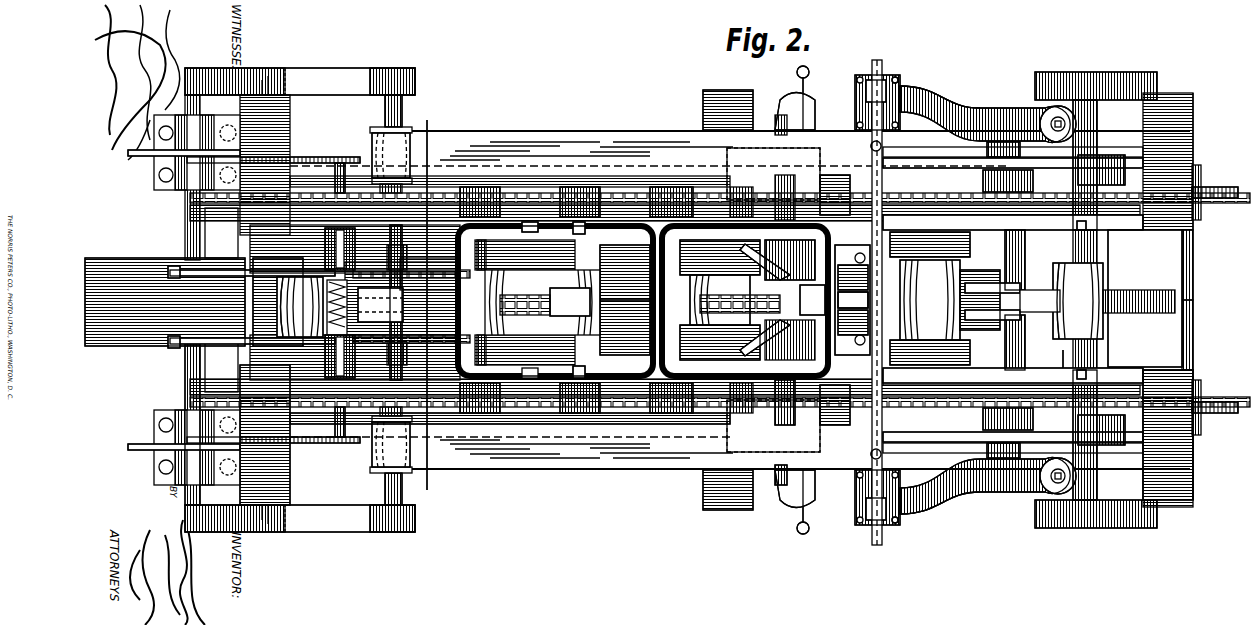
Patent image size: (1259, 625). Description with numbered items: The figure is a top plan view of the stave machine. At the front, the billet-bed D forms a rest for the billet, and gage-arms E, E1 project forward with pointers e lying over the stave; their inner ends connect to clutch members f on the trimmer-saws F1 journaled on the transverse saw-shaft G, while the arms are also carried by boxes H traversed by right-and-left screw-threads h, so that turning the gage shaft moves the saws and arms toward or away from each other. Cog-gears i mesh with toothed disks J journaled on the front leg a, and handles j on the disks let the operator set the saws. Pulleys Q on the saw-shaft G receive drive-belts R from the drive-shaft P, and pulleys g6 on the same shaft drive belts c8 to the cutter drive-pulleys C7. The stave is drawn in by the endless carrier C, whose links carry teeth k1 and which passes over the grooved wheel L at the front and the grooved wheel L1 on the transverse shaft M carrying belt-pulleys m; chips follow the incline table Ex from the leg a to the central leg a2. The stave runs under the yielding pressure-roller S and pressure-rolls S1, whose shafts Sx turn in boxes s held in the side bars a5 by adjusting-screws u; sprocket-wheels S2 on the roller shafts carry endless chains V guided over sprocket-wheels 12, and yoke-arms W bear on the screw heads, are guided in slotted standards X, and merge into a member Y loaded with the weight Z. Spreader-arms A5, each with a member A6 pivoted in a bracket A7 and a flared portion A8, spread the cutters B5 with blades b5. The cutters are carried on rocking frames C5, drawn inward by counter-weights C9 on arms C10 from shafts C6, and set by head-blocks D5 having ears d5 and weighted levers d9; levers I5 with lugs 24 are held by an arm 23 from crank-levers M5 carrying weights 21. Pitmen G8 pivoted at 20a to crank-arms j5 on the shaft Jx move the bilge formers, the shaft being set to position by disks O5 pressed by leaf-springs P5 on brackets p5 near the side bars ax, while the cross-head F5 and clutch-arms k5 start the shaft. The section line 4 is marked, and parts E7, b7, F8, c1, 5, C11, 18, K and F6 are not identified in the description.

The pulley Q is at (400, 68).
The drive-belt R is at (300, 300).
The saw-shaft G is at (402, 110).
The pulley g6 is at (375, 136).
The section line 4 is at (431, 301).
The toothed disk J is at (300, 163).
The cog-gear i is at (339, 302).
The handle j is at (182, 306).
The gage-arm E is at (178, 268).
The gage-arm E1 is at (182, 348).
The billet-bed D is at (165, 302).
The grooved wheel L is at (253, 300).
The pointer e is at (169, 307).
The drive-shaft P is at (186, 390).
The front leg a is at (716, 435).
The yoke-arm W is at (510, 190).
The sprocket-wheel S2 is at (600, 192).
The endless sprocket-chain V is at (652, 192).
The belt c8 is at (755, 289).
The trimmer-saw F1 is at (412, 262).
The roller shaft Sx is at (529, 228).
The adjusting-screw u is at (584, 302).
The longitudinal side bar a5 is at (555, 301).
The slotted standard X is at (745, 302).
The flared portion A8 is at (731, 302).
The block E7 is at (792, 250).
The spreader-arm A5 is at (852, 302).
The cutter B5 is at (853, 273).
The rod b7 is at (853, 294).
The cutting-blade b5 is at (853, 322).
The shaft C6 is at (765, 300).
The endless-chain carrier C is at (800, 292).
The drum F8 is at (730, 282).
The single member Y is at (612, 300).
The yielding pressure-roll S1 is at (690, 301).
The yielding pressure-roller S is at (629, 300).
The screw-thread h is at (293, 307).
The movable box H is at (340, 303).
The box c1 is at (380, 305).
The clutch member f is at (390, 262).
The crank-lever M5 is at (793, 305).
The pin 5 is at (799, 64).
The weight 21 is at (819, 302).
The arm 23 is at (812, 530).
The lug 24 is at (780, 505).
The rocking frame C5 is at (785, 455).
The head-block D5 is at (874, 299).
The weighted lever d9 is at (878, 80).
The apertured ear d5 is at (897, 78).
The drive-pulley C7 is at (905, 96).
The pitman G8 is at (955, 140).
The pivot 20a is at (998, 142).
The belt-pulley m is at (1096, 295).
The lever I5 is at (1033, 300).
The horizontal arm C10 is at (882, 146).
The block C11 is at (823, 193).
The counter-weight C9 is at (821, 412).
The crank-arm j5 is at (1013, 298).
The bracket p5 is at (983, 176).
The side bar ax is at (972, 492).
The block 18 is at (1078, 170).
The leaf-spring P5 is at (1013, 297).
The disk O5 is at (1058, 295).
The bracket A7 is at (1005, 240).
The guide sprocket-wheel 12 is at (1215, 300).
The transverse shaft Jx is at (1015, 285).
The block K is at (1124, 290).
The weight Z is at (1040, 301).
The grooved wheel L1 is at (1145, 298).
The tooth k1 is at (992, 319).
The clutch-arm k5 is at (1043, 301).
The box s is at (1063, 360).
The arm member A6 is at (949, 310).
The cross-head F5 is at (929, 298).
The rod F6 is at (847, 307).
The incline table Ex is at (510, 424).
The central leg a2 is at (703, 478).
The transverse shaft M is at (1143, 456).